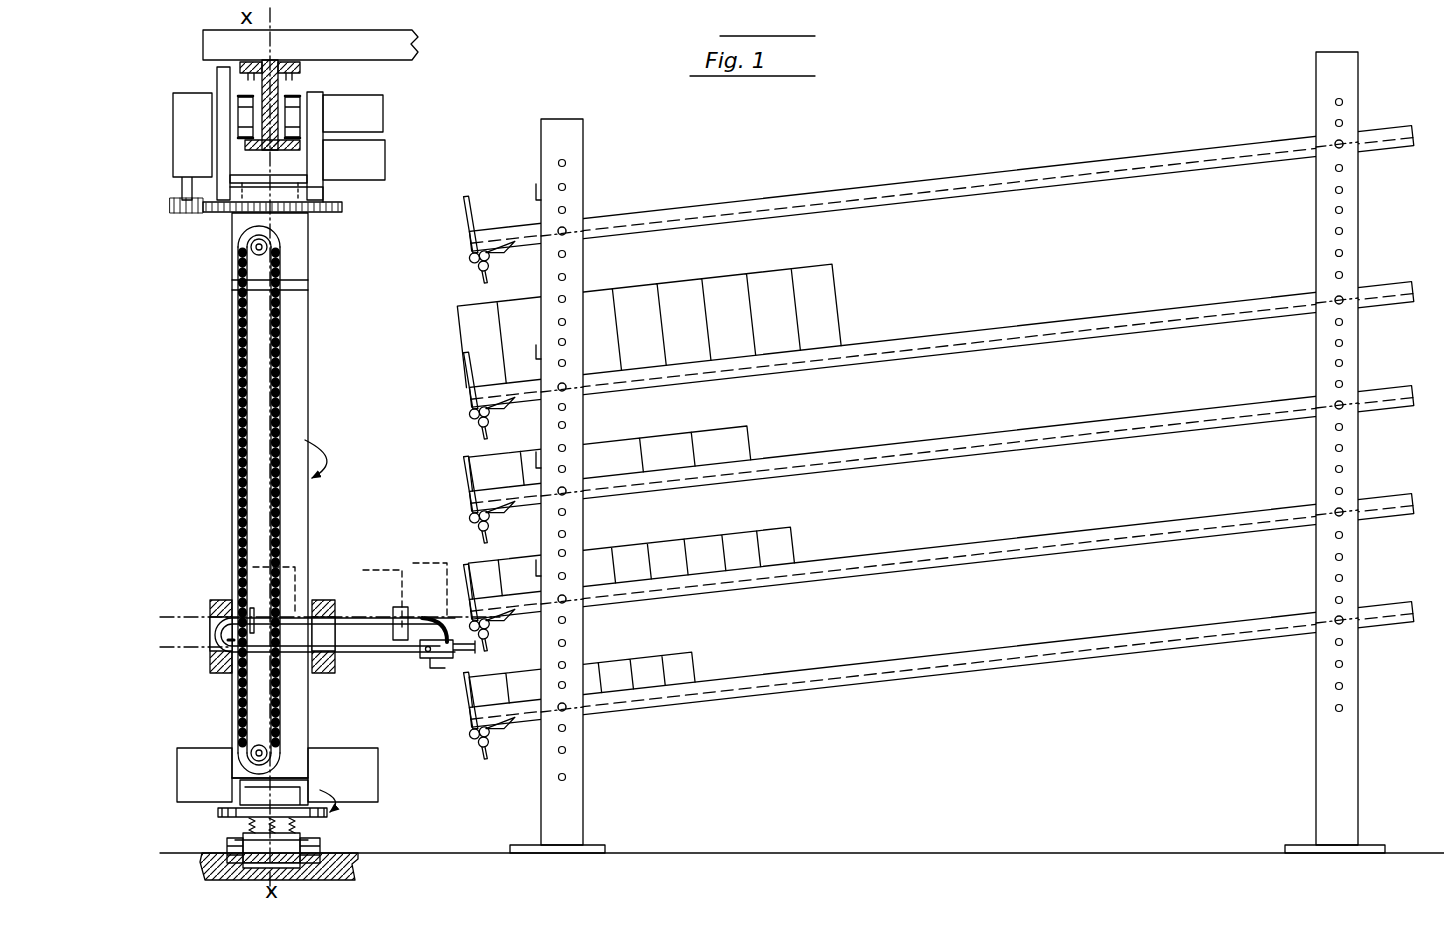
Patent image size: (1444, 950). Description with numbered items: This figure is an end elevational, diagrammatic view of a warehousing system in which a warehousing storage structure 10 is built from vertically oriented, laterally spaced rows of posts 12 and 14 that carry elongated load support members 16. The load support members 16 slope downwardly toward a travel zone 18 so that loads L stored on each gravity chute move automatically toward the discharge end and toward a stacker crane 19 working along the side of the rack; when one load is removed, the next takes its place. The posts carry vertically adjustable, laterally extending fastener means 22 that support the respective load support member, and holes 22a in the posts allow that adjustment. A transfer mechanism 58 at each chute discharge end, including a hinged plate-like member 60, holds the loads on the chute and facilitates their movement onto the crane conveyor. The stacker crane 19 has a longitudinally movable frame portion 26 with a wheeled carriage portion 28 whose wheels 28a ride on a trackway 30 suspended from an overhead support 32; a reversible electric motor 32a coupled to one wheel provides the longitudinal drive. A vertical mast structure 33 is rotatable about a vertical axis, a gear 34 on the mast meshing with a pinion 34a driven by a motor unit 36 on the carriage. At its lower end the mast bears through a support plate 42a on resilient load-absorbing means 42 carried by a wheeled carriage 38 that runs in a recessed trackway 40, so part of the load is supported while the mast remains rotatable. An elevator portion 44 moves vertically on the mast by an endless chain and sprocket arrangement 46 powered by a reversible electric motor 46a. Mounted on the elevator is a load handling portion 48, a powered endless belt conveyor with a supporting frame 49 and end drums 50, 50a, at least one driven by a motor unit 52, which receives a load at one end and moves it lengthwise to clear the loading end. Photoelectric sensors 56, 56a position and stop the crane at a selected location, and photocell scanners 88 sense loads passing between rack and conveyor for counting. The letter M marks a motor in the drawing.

The warehousing storage structure 10 is at (1010, 155).
The posts 12 is at (583, 763).
The posts 14 is at (1316, 748).
The load support members 16 is at (1148, 180).
The travel zone 18 is at (380, 298).
The stacker crane 19 is at (232, 372).
The fastener means 22 is at (566, 233).
The holes 22a is at (567, 210).
The longitudinally movable frame portion 26 is at (320, 362).
The wheeled carriage portion 28 is at (320, 95).
The wheels 28a is at (240, 112).
The trackway 30 is at (279, 62).
The overhead support 32 is at (420, 37).
The reversible electric motor 32a is at (384, 110).
The vertical mast structure 33 is at (308, 330).
The gear 34 is at (330, 228).
The pinion 34a is at (186, 215).
The motor unit 36 is at (212, 127).
The wheeled carriage 38 is at (305, 828).
The recessed trackway 40 is at (255, 866).
The resilient load-absorbing means 42 is at (245, 826).
The support plate 42a is at (222, 813).
The elevator portion 44 is at (314, 616).
The endless chain and sprocket arrangement 46 is at (300, 254).
The reversible electric motor 46a is at (197, 762).
The load handling portion 48 is at (175, 612).
The supporting frame 49 is at (292, 632).
The end drum 50 is at (426, 614).
The end drum 50a is at (222, 650).
The motor unit 52 is at (222, 600).
The photoelectric sensor 56 is at (440, 659).
The photoelectric sensor 56a is at (223, 68).
The transfer mechanism 58 is at (468, 242).
The plate-like member 60 is at (478, 222).
The photocell scanners 88 is at (426, 650).
The loads L is at (805, 262).
The motor M is at (255, 658).